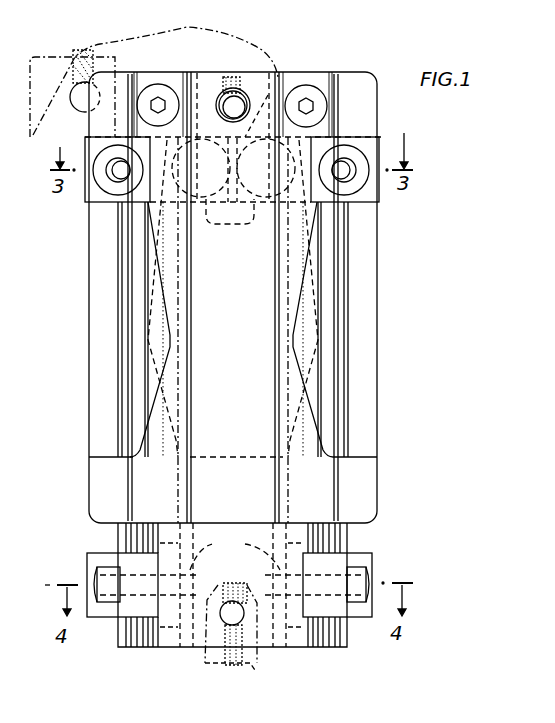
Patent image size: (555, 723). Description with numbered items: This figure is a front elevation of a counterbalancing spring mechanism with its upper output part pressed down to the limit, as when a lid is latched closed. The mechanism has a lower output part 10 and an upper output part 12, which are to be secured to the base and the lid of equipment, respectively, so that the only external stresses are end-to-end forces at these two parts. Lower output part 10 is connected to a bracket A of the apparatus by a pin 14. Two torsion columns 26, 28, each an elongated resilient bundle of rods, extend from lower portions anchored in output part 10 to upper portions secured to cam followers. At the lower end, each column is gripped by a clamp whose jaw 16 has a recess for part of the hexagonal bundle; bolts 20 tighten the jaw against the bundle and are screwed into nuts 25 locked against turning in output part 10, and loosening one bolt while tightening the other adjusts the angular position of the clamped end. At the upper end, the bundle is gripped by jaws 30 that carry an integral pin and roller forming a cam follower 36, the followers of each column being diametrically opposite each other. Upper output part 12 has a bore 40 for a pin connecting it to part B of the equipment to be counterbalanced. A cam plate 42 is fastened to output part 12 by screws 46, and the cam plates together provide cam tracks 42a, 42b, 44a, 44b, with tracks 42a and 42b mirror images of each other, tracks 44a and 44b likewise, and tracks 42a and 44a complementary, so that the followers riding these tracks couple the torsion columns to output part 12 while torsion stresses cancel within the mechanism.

The lower output part 10 is at (200, 642).
The upper output part 12 is at (348, 97).
The pin 14 is at (243, 612).
The jaw 16 is at (97, 557).
The bolt 20 is at (97, 577).
The nut 25 is at (235, 554).
The torsion column 26 is at (143, 268).
The torsion column 28 is at (335, 272).
The jaw 30 is at (97, 202).
The cam follower 36 is at (96, 151).
The bore 40 is at (242, 100).
The cam plate 42 is at (231, 298).
The cam track 42a is at (160, 308).
The cam track 42b is at (302, 315).
The cam track 44a is at (190, 367).
The cam track 44b is at (283, 380).
The screw 46 is at (152, 87).
The bracket A is at (263, 672).
The part of equipment B is at (163, 33).